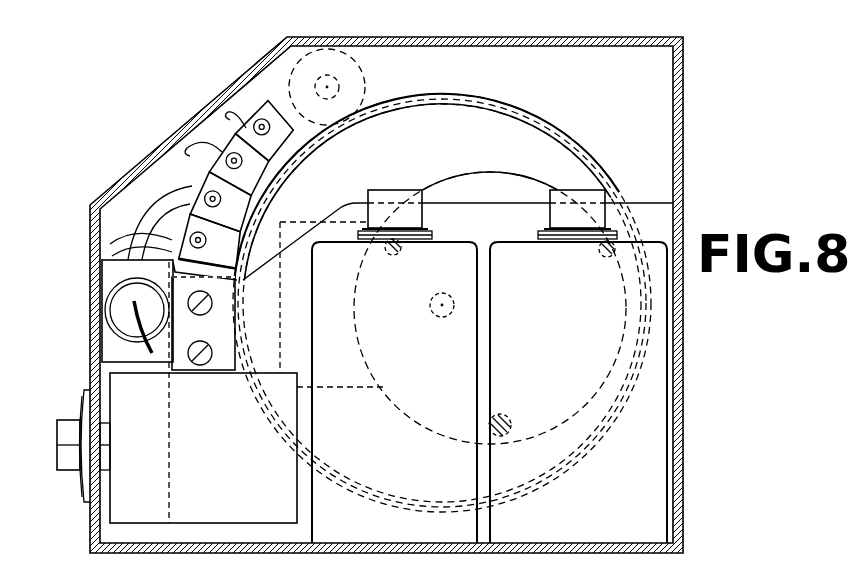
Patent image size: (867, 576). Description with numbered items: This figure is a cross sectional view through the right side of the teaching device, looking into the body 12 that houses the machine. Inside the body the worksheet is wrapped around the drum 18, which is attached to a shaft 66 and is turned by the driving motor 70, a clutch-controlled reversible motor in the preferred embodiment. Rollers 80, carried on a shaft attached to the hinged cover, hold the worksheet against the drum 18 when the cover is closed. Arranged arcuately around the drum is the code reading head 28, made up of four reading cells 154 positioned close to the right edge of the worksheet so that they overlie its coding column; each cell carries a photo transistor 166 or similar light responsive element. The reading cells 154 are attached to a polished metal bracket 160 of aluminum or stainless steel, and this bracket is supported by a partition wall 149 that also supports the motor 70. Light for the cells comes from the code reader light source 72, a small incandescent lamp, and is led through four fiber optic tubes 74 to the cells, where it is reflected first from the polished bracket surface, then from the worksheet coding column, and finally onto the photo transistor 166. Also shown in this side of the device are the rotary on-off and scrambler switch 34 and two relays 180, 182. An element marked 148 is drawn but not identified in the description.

The body 12 is at (683, 95).
The drum 18 is at (496, 100).
The code reading head 28 is at (273, 92).
The on-off and scrambler switch 34 is at (130, 490).
The shaft 66 is at (431, 296).
The driving motor 70 is at (537, 166).
The light source 72 is at (110, 343).
The fiber optic tubes 74 is at (140, 223).
The rollers 80 is at (358, 62).
The drum rim 148 is at (613, 172).
The partition wall 149 is at (187, 528).
The reading cells 154 is at (213, 110).
The polished metal bracket 160 is at (207, 175).
The photo transistor 166 is at (258, 107).
The relay 180 is at (455, 381).
The relay 182 is at (581, 381).